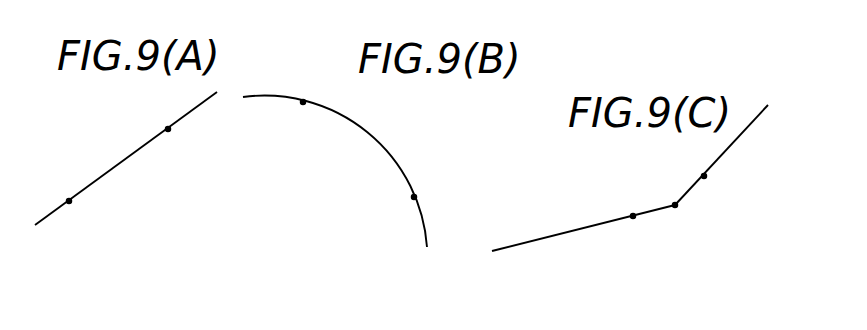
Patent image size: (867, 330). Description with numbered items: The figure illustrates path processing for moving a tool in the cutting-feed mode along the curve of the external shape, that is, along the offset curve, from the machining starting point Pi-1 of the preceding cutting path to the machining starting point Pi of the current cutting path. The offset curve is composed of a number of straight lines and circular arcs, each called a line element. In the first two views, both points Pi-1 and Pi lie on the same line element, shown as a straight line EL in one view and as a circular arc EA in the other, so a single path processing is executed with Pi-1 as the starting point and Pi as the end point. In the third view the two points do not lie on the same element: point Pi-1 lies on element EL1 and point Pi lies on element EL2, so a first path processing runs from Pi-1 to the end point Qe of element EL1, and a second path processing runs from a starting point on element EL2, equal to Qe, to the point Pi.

In FIG. 9A, the straight line EL is at (132, 156).
In FIG. 9A, the machining starting point Pi is at (180, 138).
In FIG. 9B, the machining starting point Pi is at (428, 200).
In FIG. 9C, the machining starting point Pi is at (713, 189).
In FIG. 9A, the machining starting point Pi-1 is at (88, 214).
In FIG. 9B, the circular arc EA is at (397, 162).
In FIG. 9C, the element EL1 is at (577, 232).
In FIG. 9C, the element EL2 is at (728, 150).
In FIG. 9C, the end point Qe is at (688, 217).